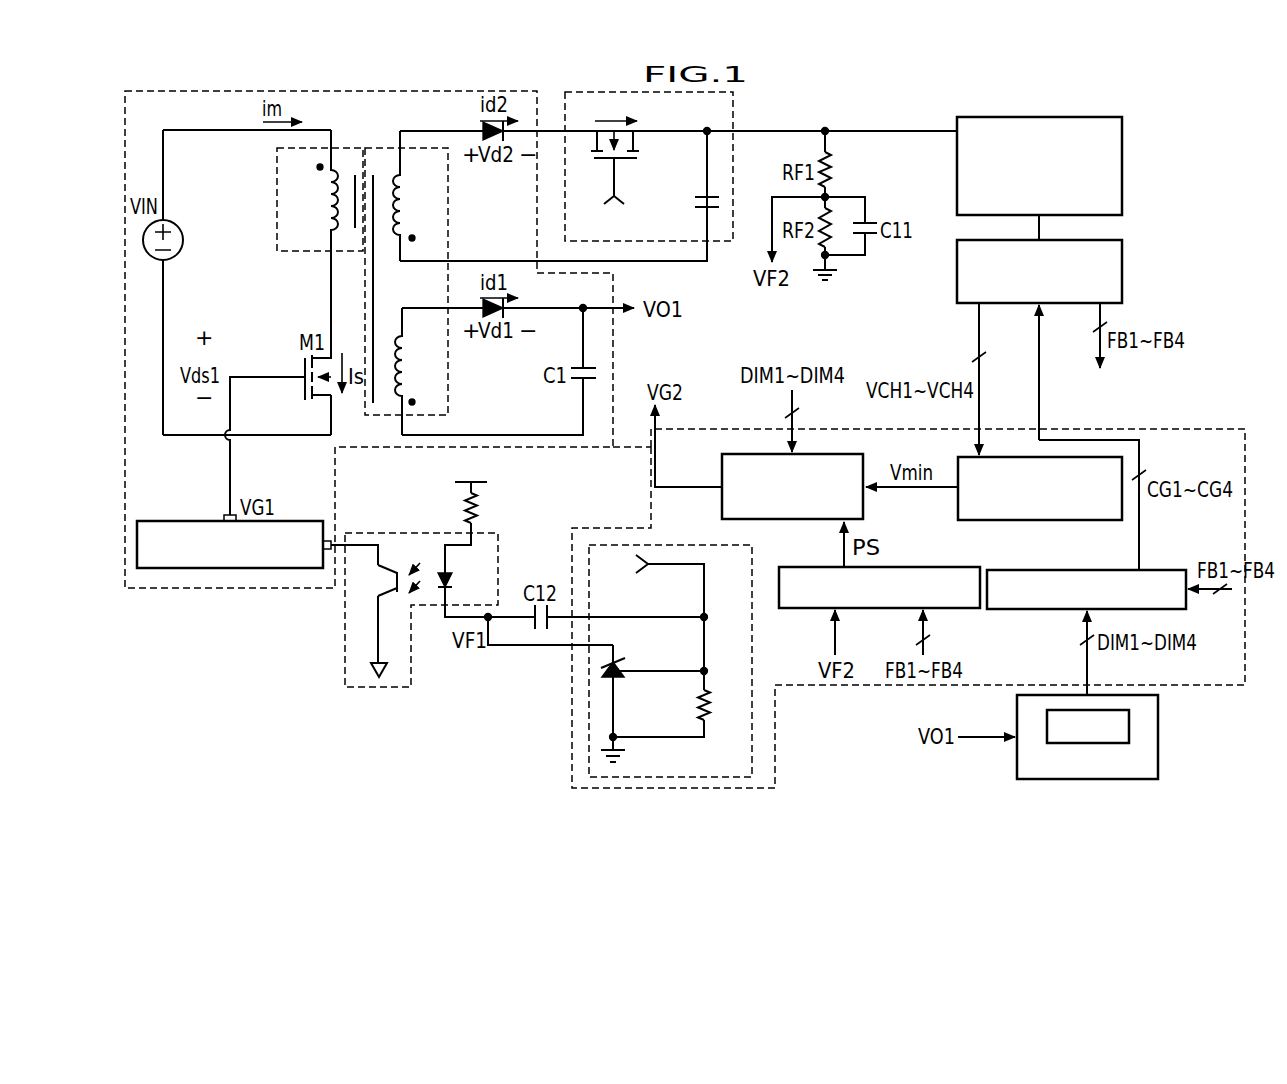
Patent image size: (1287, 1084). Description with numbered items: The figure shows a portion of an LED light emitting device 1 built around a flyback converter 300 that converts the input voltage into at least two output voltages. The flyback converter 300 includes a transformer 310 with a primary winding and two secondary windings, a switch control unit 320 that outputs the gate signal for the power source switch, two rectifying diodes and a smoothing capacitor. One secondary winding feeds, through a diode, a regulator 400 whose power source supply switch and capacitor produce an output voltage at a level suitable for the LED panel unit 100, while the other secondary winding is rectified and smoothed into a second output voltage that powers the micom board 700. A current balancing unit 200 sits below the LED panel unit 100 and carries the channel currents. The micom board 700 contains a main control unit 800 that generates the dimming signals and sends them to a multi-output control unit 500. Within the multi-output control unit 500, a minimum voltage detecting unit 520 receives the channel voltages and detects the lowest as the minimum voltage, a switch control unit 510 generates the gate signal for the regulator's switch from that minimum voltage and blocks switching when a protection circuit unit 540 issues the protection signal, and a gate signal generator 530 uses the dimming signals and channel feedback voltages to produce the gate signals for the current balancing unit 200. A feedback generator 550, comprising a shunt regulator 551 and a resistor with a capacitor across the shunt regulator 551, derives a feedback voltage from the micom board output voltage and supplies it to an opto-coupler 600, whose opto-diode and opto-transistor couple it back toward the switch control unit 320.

The LED light emitting device 1 is at (1167, 124).
The LED panel unit 100 is at (1122, 165).
The current balancing unit 200 is at (1122, 272).
The flyback converter 300 is at (235, 589).
The transformer 310 is at (290, 252).
The switch control unit 320 is at (183, 520).
The regulator 400 is at (733, 110).
The multi-output control unit 500 is at (572, 724).
The switch control unit 510 is at (782, 520).
The minimum voltage detecting unit 520 is at (1036, 521).
The gate signal generator 530 is at (1030, 610).
The protection circuit unit 540 is at (917, 567).
The feedback generator 550 is at (752, 738).
The shunt regulator 551 is at (622, 670).
The opto-coupler 600 is at (378, 688).
The micom board 700 is at (1158, 758).
The main control unit (MCU) 800 is at (1129, 725).